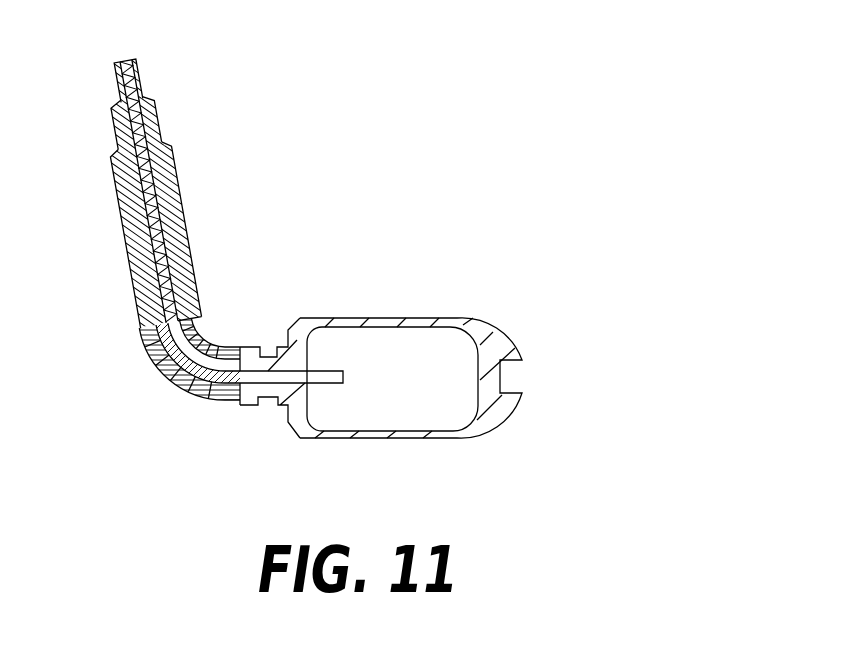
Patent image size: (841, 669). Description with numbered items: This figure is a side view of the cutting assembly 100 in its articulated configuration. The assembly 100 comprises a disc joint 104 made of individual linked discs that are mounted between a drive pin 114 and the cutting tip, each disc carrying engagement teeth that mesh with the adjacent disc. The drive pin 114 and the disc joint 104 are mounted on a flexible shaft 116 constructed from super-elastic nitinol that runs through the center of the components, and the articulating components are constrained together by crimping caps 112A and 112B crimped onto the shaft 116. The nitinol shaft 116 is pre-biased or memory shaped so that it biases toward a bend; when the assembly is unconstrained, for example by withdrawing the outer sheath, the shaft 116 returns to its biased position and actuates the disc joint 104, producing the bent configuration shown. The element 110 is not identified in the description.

The cutting assembly 100 is at (292, 241).
The disc joint 104 is at (244, 321).
The housing 110 is at (467, 322).
The crimping cap 112A is at (139, 82).
The crimping cap 112B is at (328, 388).
The drive pin 114 is at (166, 140).
The flexible shaft 116 is at (183, 200).